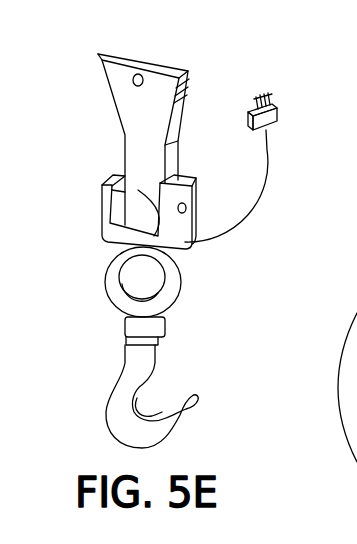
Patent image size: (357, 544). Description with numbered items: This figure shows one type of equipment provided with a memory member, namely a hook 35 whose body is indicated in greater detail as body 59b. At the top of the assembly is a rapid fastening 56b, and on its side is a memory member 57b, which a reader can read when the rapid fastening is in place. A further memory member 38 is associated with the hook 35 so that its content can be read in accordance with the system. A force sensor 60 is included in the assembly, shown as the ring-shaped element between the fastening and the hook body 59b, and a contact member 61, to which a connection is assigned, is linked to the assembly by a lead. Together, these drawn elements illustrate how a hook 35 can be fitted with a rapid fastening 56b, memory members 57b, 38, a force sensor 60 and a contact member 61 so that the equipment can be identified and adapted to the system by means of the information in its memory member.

The rapid fastening 56b is at (172, 59).
The memory member 57b is at (186, 82).
The memory member 38 is at (203, 68).
The contact member 61 is at (272, 101).
The force sensor 60 is at (180, 278).
The body 59b is at (124, 422).
The hook 35 is at (243, 412).